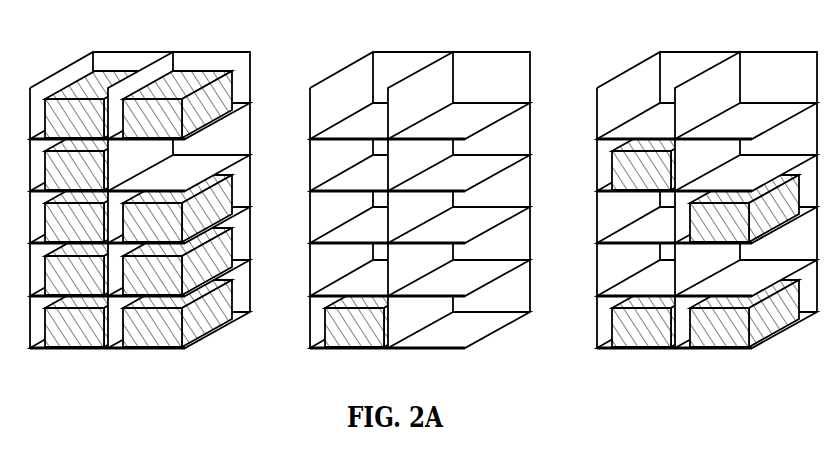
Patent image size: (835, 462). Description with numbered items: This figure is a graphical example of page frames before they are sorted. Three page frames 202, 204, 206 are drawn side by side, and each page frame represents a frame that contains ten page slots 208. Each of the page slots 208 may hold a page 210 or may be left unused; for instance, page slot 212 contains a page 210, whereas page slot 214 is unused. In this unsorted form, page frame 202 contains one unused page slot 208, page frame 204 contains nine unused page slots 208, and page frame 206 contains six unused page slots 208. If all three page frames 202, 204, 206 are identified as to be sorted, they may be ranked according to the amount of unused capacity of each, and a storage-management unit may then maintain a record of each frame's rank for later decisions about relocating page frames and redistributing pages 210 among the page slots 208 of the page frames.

The page frame 202 is at (163, 196).
The page frame 204 is at (443, 182).
The page frame 206 is at (735, 53).
The page slot 208 is at (170, 152).
The page 210 is at (182, 313).
The page slot 212 is at (206, 279).
The page slot 214 is at (443, 160).